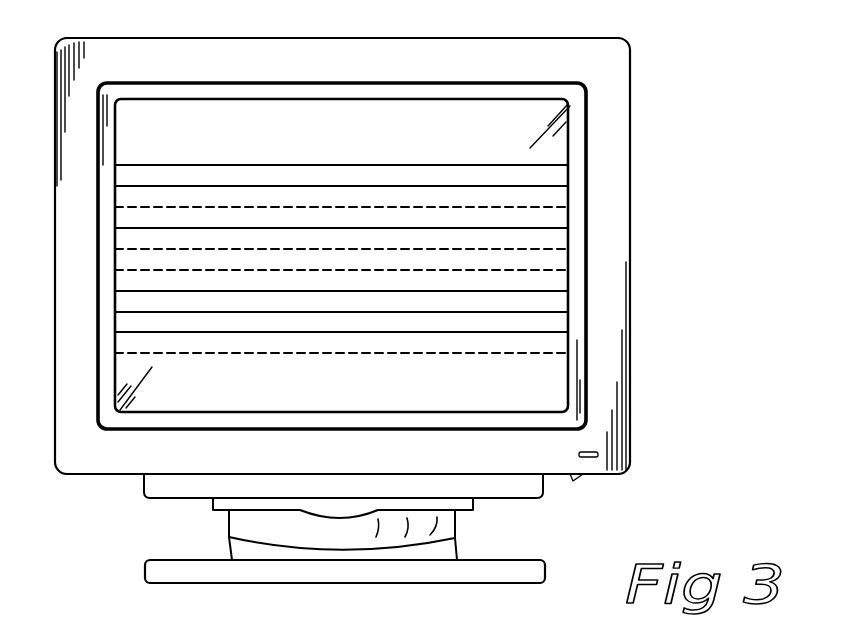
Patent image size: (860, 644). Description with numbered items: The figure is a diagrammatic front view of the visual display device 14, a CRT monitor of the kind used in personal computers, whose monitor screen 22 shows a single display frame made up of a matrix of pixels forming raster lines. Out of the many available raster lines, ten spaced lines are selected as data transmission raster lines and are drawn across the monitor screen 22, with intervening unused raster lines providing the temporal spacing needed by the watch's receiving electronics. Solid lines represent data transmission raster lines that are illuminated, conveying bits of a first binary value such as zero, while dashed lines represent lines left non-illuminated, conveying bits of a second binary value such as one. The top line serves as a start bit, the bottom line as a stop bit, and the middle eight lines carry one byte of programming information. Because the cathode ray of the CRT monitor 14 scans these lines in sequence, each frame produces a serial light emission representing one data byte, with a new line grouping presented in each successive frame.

The visual display device 14 is at (555, 463).
The monitor screen 22 is at (513, 115).